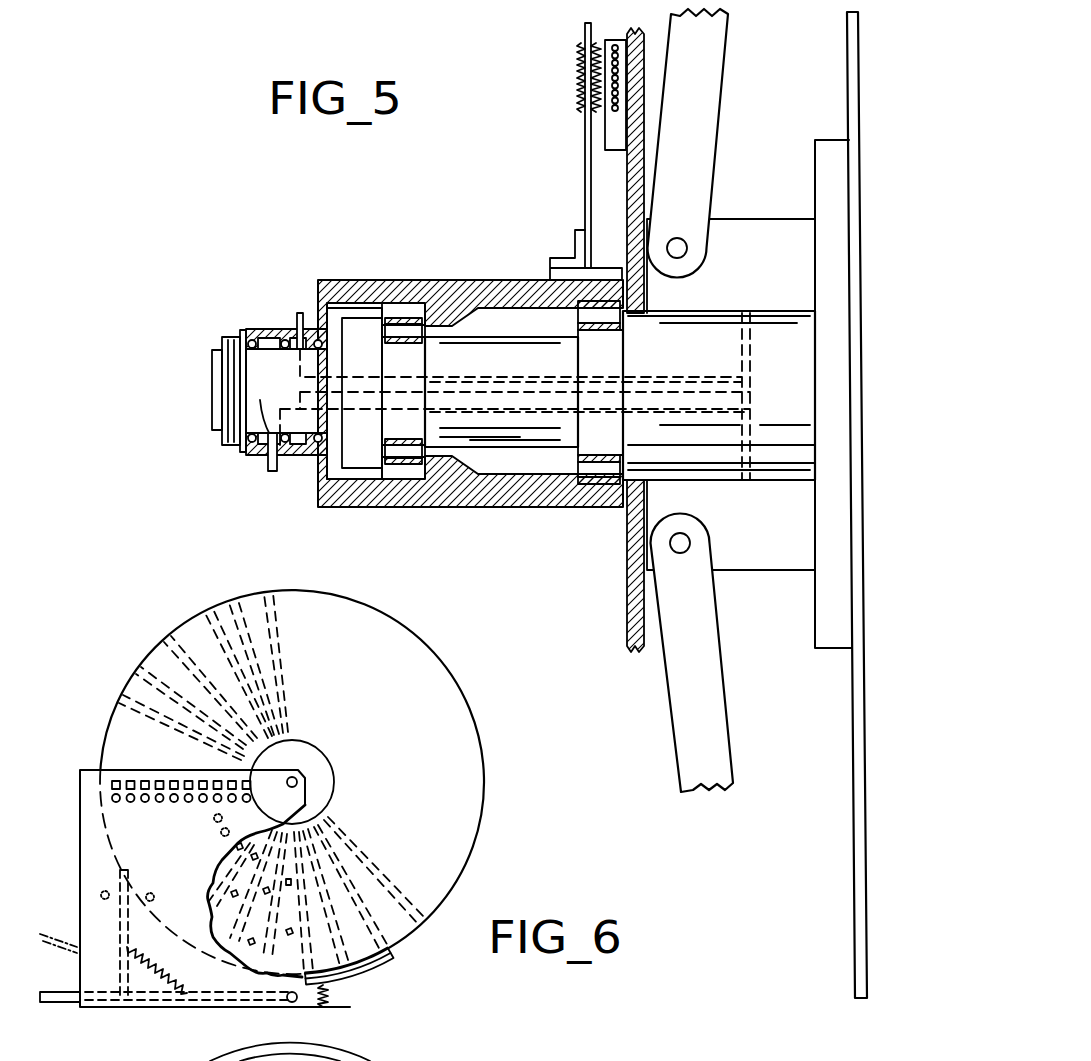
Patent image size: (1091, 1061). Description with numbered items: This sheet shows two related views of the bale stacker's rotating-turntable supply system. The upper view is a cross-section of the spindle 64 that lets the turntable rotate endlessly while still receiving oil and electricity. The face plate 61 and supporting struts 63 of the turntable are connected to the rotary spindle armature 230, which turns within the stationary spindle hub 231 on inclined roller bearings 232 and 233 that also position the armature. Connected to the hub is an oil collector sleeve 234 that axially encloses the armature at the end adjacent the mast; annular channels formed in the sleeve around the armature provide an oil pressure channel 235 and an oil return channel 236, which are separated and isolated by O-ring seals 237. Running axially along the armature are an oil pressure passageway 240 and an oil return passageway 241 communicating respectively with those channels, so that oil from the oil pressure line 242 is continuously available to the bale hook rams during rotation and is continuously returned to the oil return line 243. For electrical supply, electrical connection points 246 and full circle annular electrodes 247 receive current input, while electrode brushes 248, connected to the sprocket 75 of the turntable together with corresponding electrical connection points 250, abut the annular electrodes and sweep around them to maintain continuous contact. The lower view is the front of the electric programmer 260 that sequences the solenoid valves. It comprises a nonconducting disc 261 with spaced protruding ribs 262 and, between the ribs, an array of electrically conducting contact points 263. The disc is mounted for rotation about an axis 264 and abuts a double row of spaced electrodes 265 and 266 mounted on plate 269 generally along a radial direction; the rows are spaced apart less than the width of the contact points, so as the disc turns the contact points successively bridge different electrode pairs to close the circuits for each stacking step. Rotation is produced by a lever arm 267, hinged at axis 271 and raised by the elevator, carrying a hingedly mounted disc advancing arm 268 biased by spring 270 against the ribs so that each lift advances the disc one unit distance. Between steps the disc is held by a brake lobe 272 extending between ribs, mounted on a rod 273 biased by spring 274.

In FIG. 5, the face plate 61 is at (859, 93).
In FIG. 5, the structural braces 63 is at (723, 706).
In FIG. 5, the spindle 64 is at (519, 520).
In FIG. 5, the sprocket 75 is at (651, 326).
In FIG. 5, the spindle armature 230 is at (212, 404).
In FIG. 5, the spindle hub 231 is at (392, 280).
In FIG. 5, the inclined roller bearing 232 is at (416, 462).
In FIG. 5, the inclined roller bearing 233 is at (582, 486).
In FIG. 5, the oil collector sleeve 234 is at (248, 334).
In FIG. 5, the oil pressure channel 235 is at (300, 455).
In FIG. 5, the oil return channel 236 is at (286, 392).
In FIG. 5, the O-ring seals 237 is at (325, 344).
In FIG. 5, the oil pressure passageway 240 is at (470, 372).
In FIG. 5, the oil return passageway 241 is at (516, 408).
In FIG. 5, the oil pressure line 242 is at (300, 312).
In FIG. 5, the oil return line 243 is at (268, 466).
In FIG. 5, the electrical connection points 246 is at (578, 112).
In FIG. 5, the full circle annular electrodes 247 is at (583, 31).
In FIG. 5, the electrode brushes 248 is at (602, 41).
In FIG. 5, the electrical connection points 250 is at (626, 45).
In FIG. 6, the electric programmer 260 is at (121, 642).
In FIG. 6, the disc 261 is at (472, 713).
In FIG. 6, the ribs 262 is at (209, 619).
In FIG. 6, the electrical contact points 263 is at (253, 940).
In FIG. 6, the axis 264 is at (297, 778).
In FIG. 6, the electrodes 265 is at (118, 803).
In FIG. 6, the electrodes 266 is at (118, 778).
In FIG. 6, the lever arm 267 is at (52, 1004).
In FIG. 6, the disc advancing arm 268 is at (120, 906).
In FIG. 6, the plate 269 is at (79, 866).
In FIG. 6, the spring 270 is at (165, 988).
In FIG. 6, the axis 271 is at (292, 1003).
In FIG. 6, the brake lobe 272 is at (392, 961).
In FIG. 6, the rod 273 is at (352, 975).
In FIG. 6, the spring 274 is at (330, 1000).